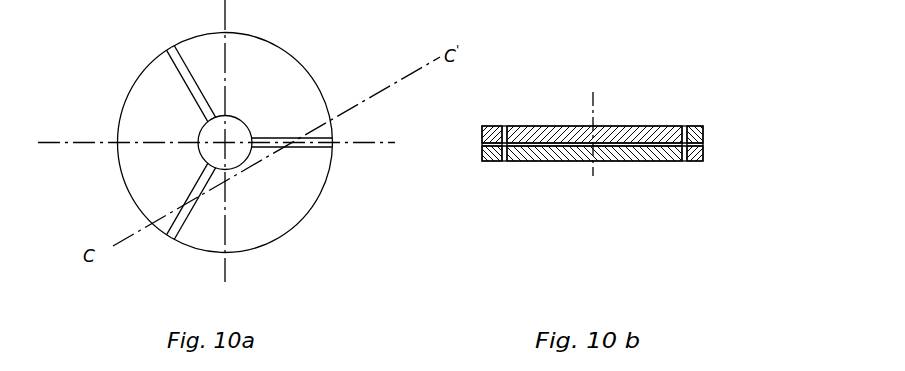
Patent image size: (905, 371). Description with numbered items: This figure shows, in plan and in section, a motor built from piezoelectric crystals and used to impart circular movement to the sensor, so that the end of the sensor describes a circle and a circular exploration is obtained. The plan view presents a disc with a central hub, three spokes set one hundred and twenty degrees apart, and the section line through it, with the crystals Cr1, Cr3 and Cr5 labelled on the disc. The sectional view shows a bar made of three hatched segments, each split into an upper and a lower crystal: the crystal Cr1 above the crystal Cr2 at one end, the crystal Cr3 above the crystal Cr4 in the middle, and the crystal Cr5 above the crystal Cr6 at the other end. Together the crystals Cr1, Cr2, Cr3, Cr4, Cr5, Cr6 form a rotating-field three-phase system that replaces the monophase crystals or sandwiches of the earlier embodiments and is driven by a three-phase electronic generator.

In FIG. 10A, the piezoelectric crystal Cr1 is at (119, 142).
In FIG. 10B, the piezoelectric crystal Cr1 is at (459, 121).
In FIG. 10B, the piezoelectric crystal Cr2 is at (449, 170).
In FIG. 10A, the piezoelectric crystal Cr3 is at (245, 212).
In FIG. 10B, the piezoelectric crystal Cr3 is at (594, 117).
In FIG. 10B, the piezoelectric crystal Cr4 is at (590, 170).
In FIG. 10A, the piezoelectric crystal Cr5 is at (274, 87).
In FIG. 10B, the piezoelectric crystal Cr5 is at (737, 124).
In FIG. 10B, the piezoelectric crystal Cr6 is at (738, 170).